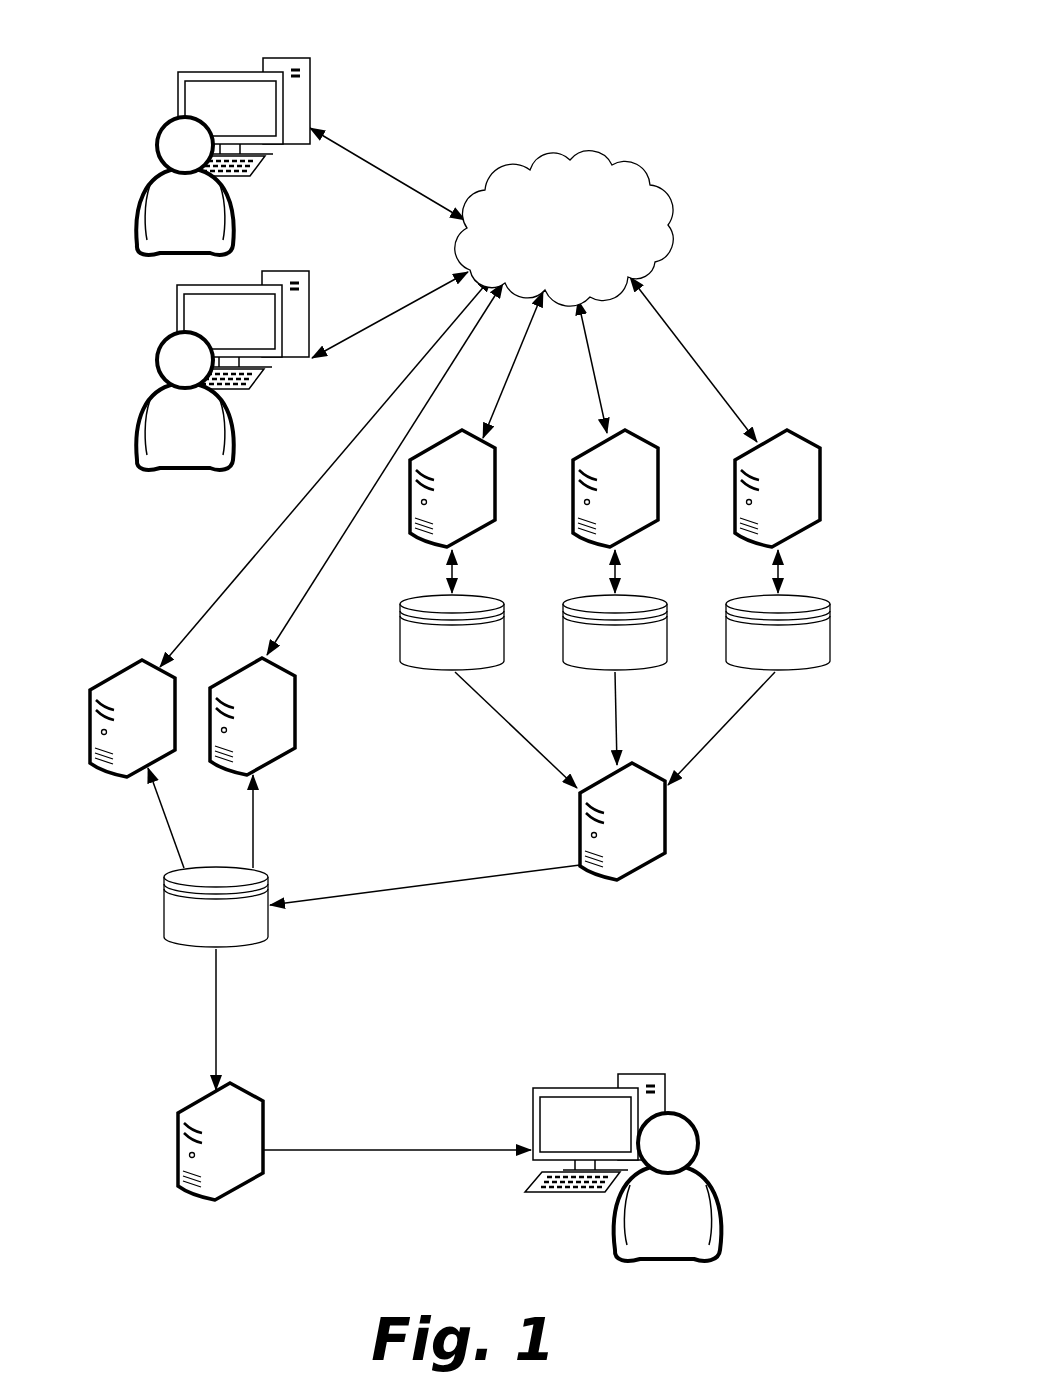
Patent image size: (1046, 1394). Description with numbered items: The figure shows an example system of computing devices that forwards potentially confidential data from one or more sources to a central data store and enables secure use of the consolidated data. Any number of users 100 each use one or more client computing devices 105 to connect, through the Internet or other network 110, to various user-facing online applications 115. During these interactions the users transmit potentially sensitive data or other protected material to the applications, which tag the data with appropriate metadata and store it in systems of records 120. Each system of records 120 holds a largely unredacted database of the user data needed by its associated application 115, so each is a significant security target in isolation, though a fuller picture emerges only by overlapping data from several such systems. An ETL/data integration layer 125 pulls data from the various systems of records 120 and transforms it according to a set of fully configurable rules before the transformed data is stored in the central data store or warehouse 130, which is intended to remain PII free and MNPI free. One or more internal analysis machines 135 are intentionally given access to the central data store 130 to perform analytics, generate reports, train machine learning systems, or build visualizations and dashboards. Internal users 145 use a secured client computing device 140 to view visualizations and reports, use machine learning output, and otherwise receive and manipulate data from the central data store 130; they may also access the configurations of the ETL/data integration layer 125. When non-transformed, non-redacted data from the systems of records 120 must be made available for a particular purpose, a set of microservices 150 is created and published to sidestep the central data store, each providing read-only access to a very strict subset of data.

The users 100 is at (152, 167).
The client computing devices 105 is at (178, 72).
The network 110 is at (546, 240).
The user-facing online applications 115 is at (497, 450).
The systems of records 120 is at (431, 660).
The ETL/data integration layer 125 is at (665, 827).
The central data store 130 is at (196, 935).
The internal analysis machines 135 is at (260, 1102).
The secured client computing device 140 is at (667, 1082).
The internal users 145 is at (703, 1170).
The microservices 150 is at (120, 670).